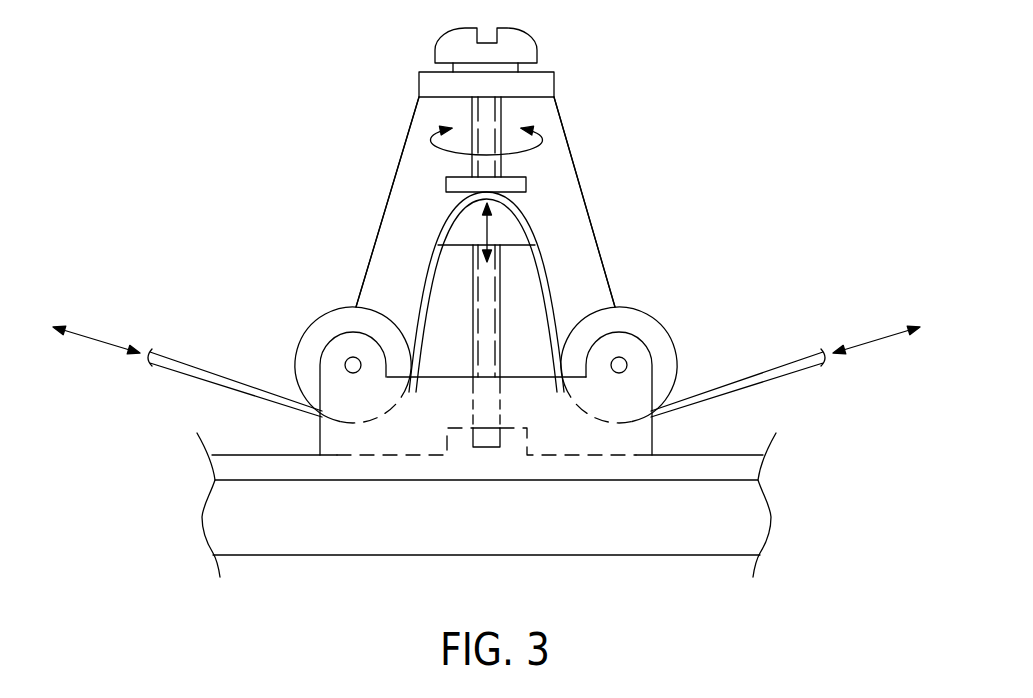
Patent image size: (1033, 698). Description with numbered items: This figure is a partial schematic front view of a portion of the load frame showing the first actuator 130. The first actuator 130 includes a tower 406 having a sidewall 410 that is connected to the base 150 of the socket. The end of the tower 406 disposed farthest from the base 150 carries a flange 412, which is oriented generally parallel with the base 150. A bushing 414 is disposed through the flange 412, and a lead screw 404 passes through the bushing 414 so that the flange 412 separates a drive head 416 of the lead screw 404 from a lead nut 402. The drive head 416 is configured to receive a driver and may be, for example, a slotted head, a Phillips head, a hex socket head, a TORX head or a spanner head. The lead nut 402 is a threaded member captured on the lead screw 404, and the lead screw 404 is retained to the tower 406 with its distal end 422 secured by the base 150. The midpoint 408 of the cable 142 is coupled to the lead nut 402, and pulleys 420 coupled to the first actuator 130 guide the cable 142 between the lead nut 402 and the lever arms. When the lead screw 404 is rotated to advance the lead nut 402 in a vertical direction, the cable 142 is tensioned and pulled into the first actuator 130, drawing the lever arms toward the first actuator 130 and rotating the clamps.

The first actuator 130 is at (725, 122).
The cable 142 is at (555, 316).
The base 150 is at (712, 465).
The lead nut 402 is at (508, 228).
The lead screw 404 is at (497, 302).
The tower 406 is at (370, 235).
The midpoint of the cable 408 is at (533, 197).
The sidewall 410 is at (393, 182).
The flange 412 is at (420, 83).
The bushing 414 is at (510, 68).
The drive head 416 is at (459, 43).
The pulleys 420 is at (318, 343).
The distal end 422 is at (486, 447).